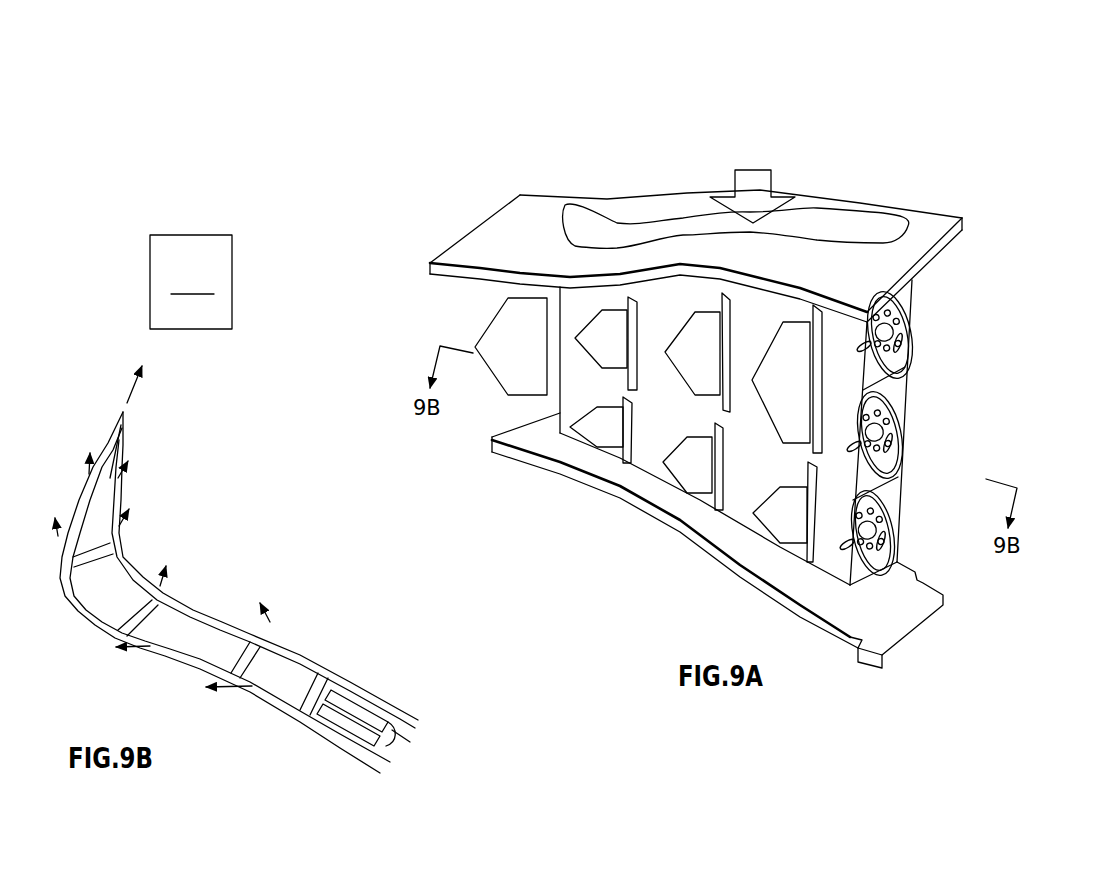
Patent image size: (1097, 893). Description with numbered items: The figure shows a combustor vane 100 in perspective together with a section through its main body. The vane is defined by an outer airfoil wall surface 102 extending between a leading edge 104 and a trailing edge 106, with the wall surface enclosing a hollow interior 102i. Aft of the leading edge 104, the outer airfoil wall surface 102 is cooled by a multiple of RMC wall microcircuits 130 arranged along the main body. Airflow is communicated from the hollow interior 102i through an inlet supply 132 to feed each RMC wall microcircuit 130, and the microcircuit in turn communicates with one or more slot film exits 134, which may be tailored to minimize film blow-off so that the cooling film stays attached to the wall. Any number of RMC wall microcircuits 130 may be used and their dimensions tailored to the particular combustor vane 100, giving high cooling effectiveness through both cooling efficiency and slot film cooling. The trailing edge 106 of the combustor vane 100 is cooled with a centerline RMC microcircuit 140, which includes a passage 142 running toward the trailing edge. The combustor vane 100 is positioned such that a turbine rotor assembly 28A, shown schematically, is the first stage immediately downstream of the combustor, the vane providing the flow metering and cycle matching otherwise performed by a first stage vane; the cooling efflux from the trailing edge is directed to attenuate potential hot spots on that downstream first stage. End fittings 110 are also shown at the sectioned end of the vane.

In FIG. 9A, the combustor vane 100 is at (990, 145).
In FIG. 9A, the outer airfoil wall surface 102 is at (748, 490).
In FIG. 9B, the outer airfoil wall surface 102 is at (295, 707).
In FIG. 9A, the hollow interior 102i is at (803, 215).
In FIG. 9B, the hollow interior 102i is at (197, 640).
In FIG. 9A, the leading edge 104 is at (843, 350).
In FIG. 9A, the trailing edge 106 is at (590, 296).
In FIG. 9B, the trailing edge 106 is at (128, 445).
In FIG. 9A, the end fitting 110 is at (942, 274).
In FIG. 9B, the end fitting 110 is at (390, 695).
In FIG. 9B, the RMC wall microcircuit 130 is at (215, 605).
In FIG. 9B, the inlet supply 132 is at (288, 690).
In FIG. 9A, the slot film exit 134 is at (722, 471).
In FIG. 9B, the slot film exit 134 is at (270, 618).
In FIG. 9B, the centerline RMC microcircuit 140 is at (103, 452).
In FIG. 9A, the passage 142 is at (560, 357).
In FIG. 9B, the passage 142 is at (120, 433).
In FIG. 9B, the turbine rotor assembly 28A is at (191, 282).